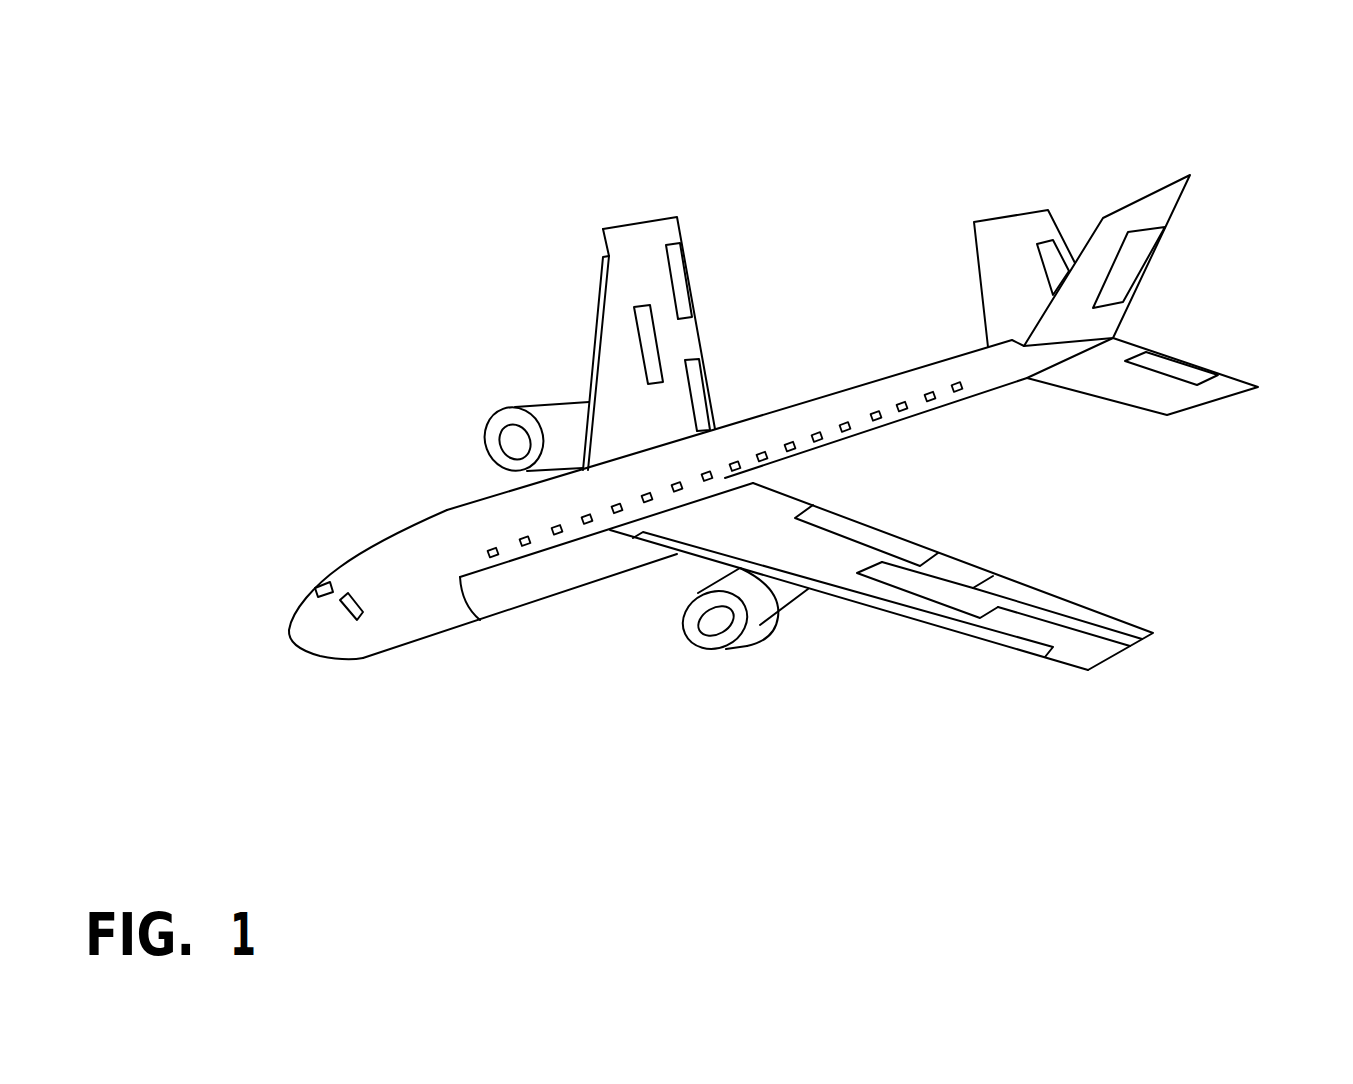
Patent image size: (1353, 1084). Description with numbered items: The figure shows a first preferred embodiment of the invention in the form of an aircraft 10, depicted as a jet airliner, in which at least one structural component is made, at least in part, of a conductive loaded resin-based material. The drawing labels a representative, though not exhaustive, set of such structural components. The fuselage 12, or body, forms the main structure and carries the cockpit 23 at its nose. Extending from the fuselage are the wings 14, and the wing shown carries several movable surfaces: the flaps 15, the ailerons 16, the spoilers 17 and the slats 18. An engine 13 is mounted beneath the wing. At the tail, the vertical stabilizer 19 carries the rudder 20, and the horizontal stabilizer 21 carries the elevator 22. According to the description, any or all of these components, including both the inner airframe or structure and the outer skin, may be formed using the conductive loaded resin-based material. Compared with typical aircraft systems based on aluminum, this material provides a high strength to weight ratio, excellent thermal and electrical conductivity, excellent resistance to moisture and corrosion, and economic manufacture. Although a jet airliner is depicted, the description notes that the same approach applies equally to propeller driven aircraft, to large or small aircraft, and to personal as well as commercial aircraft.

The aircraft 10 is at (262, 108).
The fuselage 12 is at (508, 592).
The engine 13 is at (760, 622).
The wings 14 is at (1130, 637).
The flaps 15 is at (898, 543).
The ailerons 16 is at (1080, 613).
The spoilers 17 is at (1052, 613).
The slats 18 is at (975, 635).
The vertical stabilizer 19 is at (1190, 176).
The rudder 20 is at (1137, 265).
The horizontal stabilizer 21 is at (1165, 407).
The elevator 22 is at (1202, 368).
The cockpit 23 is at (307, 648).